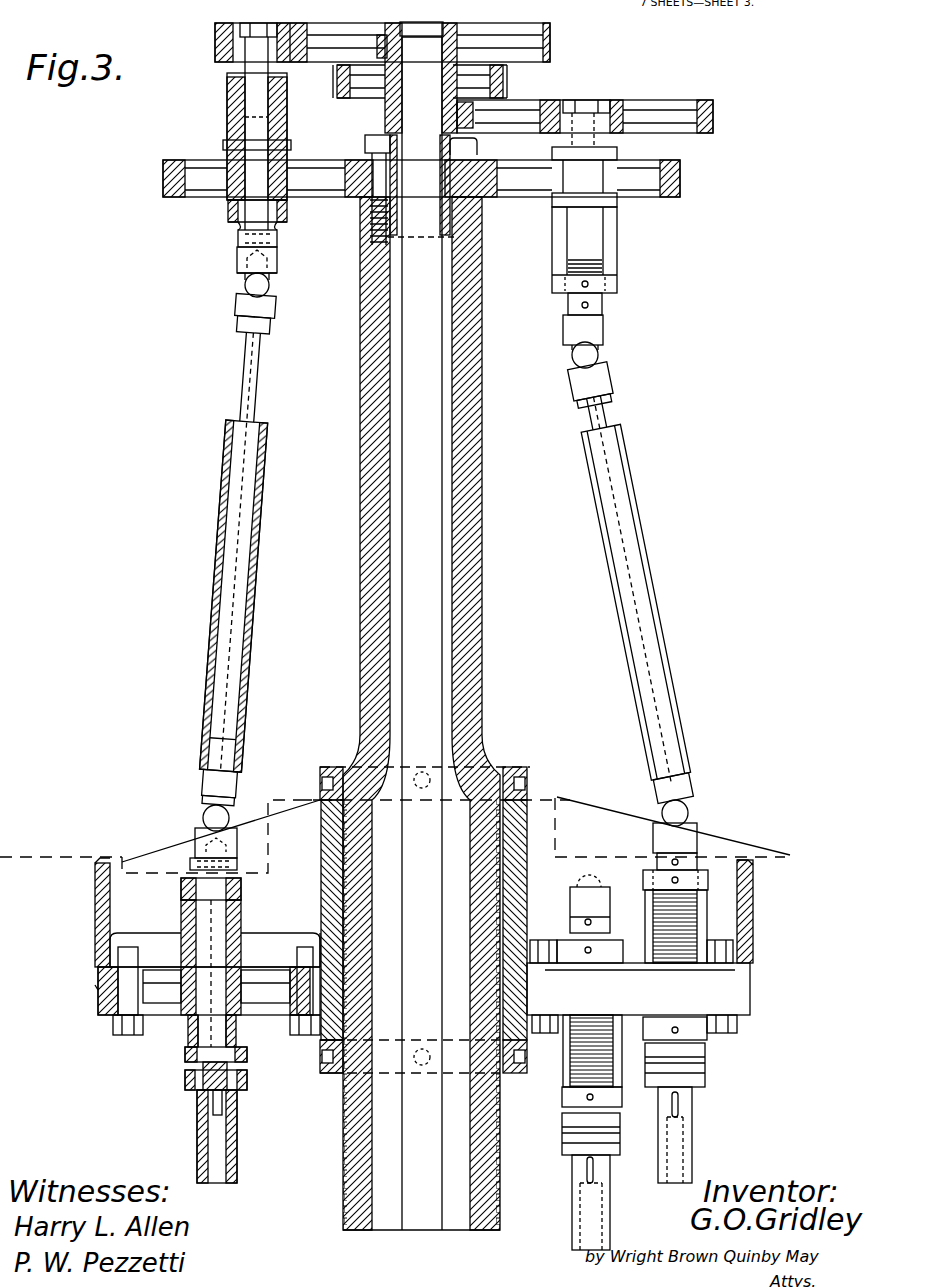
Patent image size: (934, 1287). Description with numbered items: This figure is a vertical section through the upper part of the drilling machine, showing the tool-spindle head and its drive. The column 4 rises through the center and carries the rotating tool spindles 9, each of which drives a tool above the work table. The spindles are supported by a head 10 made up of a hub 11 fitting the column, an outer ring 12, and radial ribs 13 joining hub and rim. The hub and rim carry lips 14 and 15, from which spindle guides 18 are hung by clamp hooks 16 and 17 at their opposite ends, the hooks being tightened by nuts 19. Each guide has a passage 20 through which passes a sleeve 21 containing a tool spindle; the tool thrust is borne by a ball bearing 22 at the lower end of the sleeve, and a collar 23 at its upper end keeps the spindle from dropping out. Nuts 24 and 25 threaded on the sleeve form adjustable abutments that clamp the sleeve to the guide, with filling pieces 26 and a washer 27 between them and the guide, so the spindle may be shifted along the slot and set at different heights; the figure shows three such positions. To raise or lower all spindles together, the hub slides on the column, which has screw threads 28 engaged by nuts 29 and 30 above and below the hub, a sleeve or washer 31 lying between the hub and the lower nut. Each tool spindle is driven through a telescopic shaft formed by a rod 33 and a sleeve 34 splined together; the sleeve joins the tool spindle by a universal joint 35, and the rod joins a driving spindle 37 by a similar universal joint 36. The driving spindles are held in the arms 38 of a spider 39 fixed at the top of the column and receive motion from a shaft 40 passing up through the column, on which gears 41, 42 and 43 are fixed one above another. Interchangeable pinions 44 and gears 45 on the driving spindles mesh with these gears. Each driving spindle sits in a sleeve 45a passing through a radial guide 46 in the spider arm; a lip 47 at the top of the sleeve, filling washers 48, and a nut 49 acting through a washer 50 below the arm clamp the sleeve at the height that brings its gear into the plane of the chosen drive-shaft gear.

The column 4 is at (362, 590).
The tool spindle 9 is at (212, 1050).
The head 10 is at (745, 905).
The hub 11 is at (322, 888).
The outer ring 12 is at (95, 895).
The radial ribs 13 is at (152, 857).
The lip 14 is at (320, 960).
The lip 15 is at (97, 975).
The clamp hook 16 is at (298, 952).
The clamp hook 17 is at (100, 945).
The spindle guide 18 is at (110, 1005).
The nut 19 is at (286, 1048).
The passage 20 is at (150, 1015).
The sleeve 21 is at (247, 1000).
The ball bearing 22 is at (188, 1065).
The collar 23 is at (240, 862).
The nut 24 is at (190, 885).
The nut 25 is at (186, 1078).
The filling pieces 26 is at (190, 920).
The washer 27 is at (182, 1050).
The screw threads 28 is at (343, 1155).
The nut 29 is at (510, 767).
The nut 30 is at (333, 1045).
The sleeve or washer 31 is at (318, 1035).
The rod 33 is at (255, 380).
The sleeve 34 is at (258, 545).
The universal joint 35 is at (205, 805).
The universal joint 36 is at (245, 287).
The driving spindle 37 is at (257, 170).
The arms 38 is at (165, 175).
The spider 39 is at (358, 160).
The shaft 40 is at (412, 368).
The gear 41 is at (384, 122).
The gear 42 is at (337, 93).
The gear 43 is at (340, 70).
The pinion 44 is at (218, 63).
The gear 45 is at (710, 105).
The sleeve 45a is at (700, 155).
The radial guide 46 is at (200, 180).
The lip 47 is at (228, 77).
The filling washers 48 is at (230, 108).
The nut 49 is at (236, 220).
The washer 50 is at (285, 205).